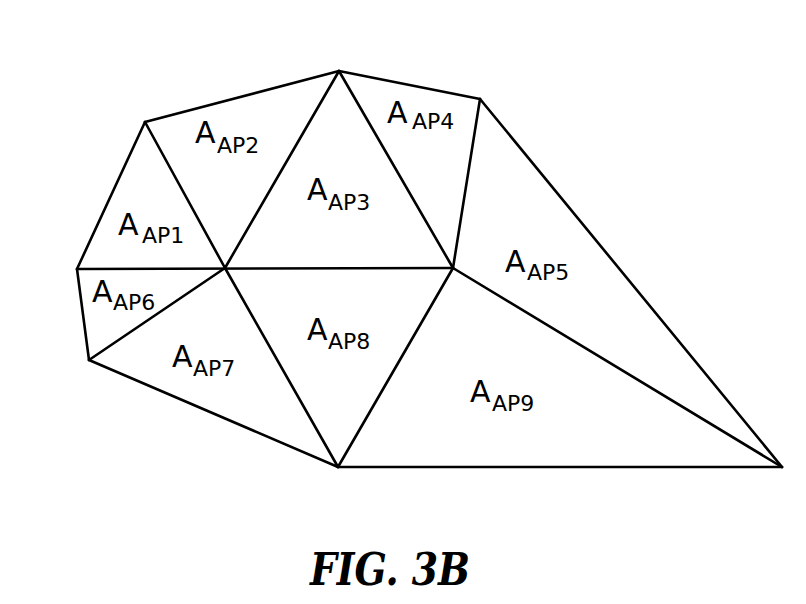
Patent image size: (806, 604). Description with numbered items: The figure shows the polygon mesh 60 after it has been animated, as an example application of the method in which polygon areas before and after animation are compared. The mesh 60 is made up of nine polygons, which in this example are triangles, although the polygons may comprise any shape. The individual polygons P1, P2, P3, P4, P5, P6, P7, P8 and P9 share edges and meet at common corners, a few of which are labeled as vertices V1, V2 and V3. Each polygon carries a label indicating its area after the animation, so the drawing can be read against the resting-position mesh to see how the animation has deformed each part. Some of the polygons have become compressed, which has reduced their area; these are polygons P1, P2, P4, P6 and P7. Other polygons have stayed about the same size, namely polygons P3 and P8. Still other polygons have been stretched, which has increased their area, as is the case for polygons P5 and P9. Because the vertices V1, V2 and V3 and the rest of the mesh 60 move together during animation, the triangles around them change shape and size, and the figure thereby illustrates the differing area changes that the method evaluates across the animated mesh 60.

The polygon mesh 60 is at (398, 268).
The polygon P1 is at (135, 182).
The polygon P2 is at (242, 112).
The polygon P3 is at (340, 120).
The polygon P4 is at (467, 110).
The polygon P5 is at (520, 187).
The polygon P6 is at (95, 330).
The polygon P7 is at (213, 400).
The polygon P8 is at (340, 415).
The polygon P9 is at (603, 445).
The vertex V1 is at (145, 121).
The vertex V2 is at (340, 69).
The vertex V3 is at (225, 265).